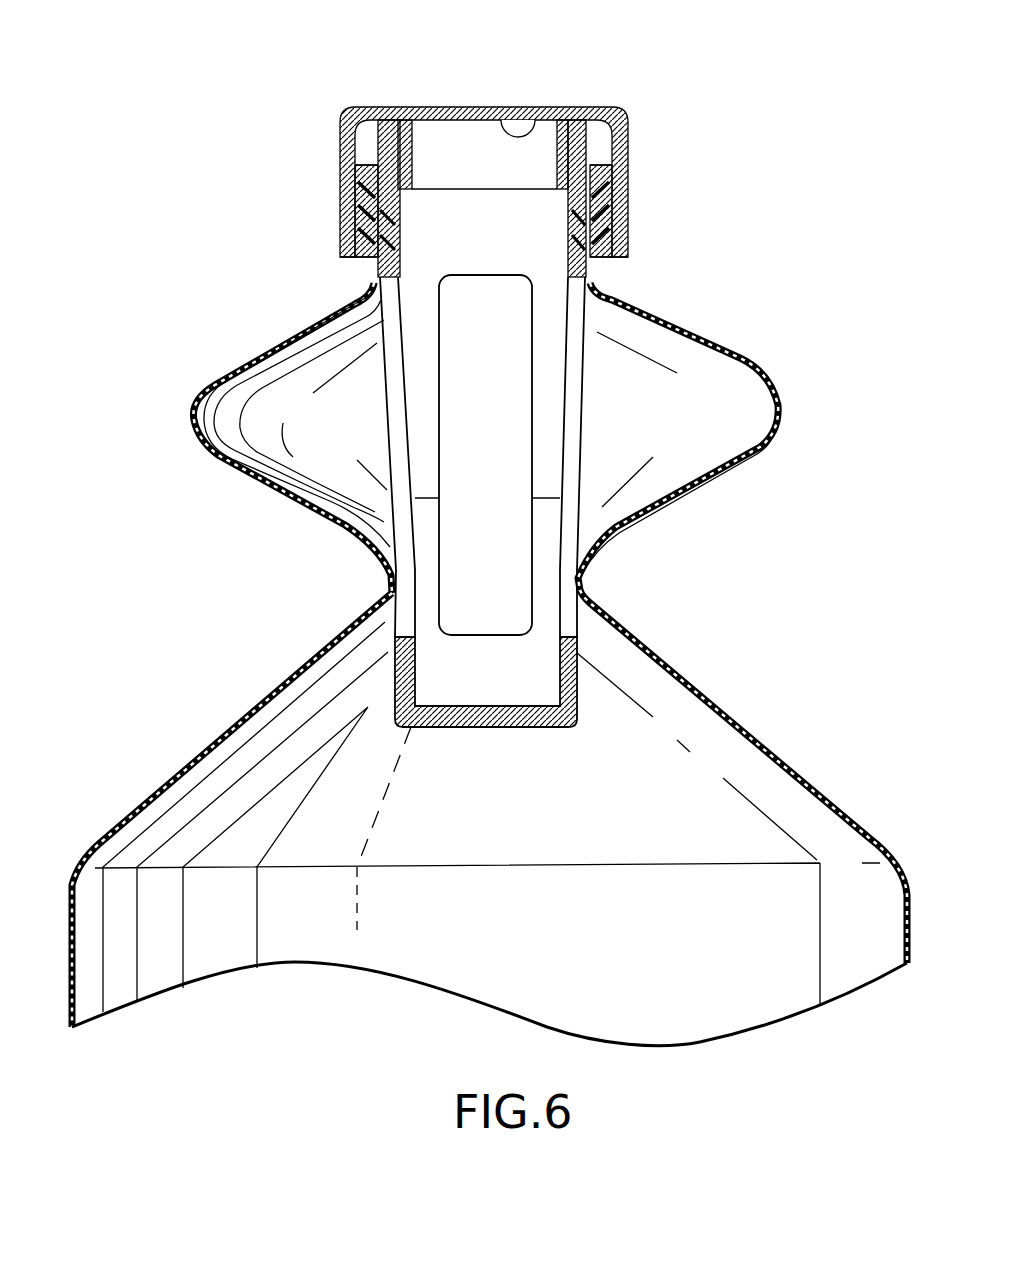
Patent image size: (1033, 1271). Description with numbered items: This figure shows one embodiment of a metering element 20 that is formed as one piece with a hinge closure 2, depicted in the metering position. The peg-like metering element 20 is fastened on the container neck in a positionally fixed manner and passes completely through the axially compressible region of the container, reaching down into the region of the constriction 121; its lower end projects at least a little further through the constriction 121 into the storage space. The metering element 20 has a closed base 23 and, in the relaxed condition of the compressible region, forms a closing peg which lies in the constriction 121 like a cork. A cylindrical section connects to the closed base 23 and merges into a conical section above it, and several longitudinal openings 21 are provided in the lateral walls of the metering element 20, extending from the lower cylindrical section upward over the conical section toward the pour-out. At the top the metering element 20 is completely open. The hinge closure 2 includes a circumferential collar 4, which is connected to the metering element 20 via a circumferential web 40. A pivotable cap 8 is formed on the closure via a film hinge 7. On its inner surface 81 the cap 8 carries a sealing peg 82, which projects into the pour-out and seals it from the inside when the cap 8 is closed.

The hinge closure 2 is at (650, 105).
The circumferential collar 4 is at (340, 237).
The circumferential web 40 is at (362, 167).
The film hinge 7 is at (630, 162).
The pivotable cap 8 is at (352, 117).
The inner surface 81 is at (532, 112).
The sealing peg 82 is at (412, 150).
The metering element 20 is at (547, 402).
The longitudinal openings 21 is at (500, 543).
The constriction 121 is at (390, 574).
The closed base 23 is at (531, 729).